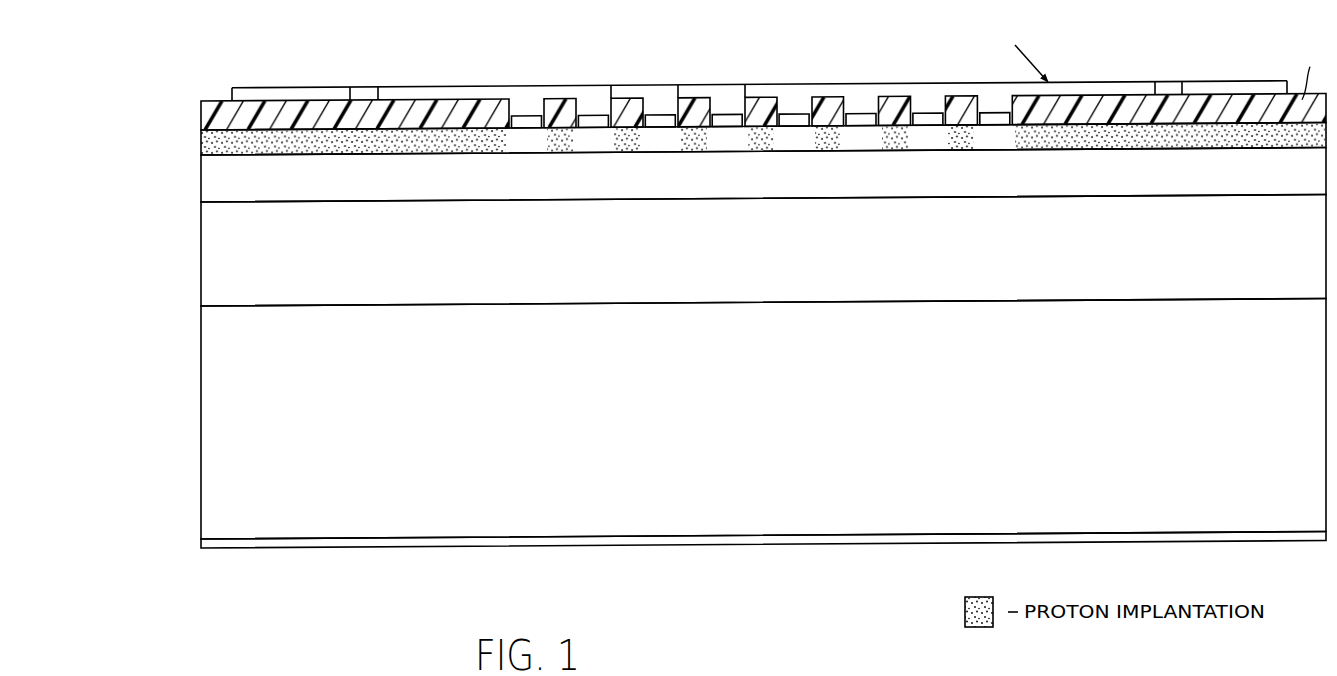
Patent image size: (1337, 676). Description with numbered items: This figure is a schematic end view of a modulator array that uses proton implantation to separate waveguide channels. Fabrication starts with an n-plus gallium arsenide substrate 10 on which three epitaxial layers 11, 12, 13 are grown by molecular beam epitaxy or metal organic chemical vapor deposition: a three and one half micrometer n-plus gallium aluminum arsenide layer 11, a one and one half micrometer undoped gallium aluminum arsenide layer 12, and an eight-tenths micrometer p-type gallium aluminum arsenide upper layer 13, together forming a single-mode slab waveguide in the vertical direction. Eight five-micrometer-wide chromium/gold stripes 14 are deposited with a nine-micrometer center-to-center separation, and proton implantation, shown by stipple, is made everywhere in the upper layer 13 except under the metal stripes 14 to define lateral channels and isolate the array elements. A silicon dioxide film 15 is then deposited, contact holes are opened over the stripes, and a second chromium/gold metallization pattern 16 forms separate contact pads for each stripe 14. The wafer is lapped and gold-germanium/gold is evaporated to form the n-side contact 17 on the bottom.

The n+-GaAs substrate 10 is at (204, 482).
The epitaxial layer 11 is at (204, 264).
The epitaxial layer 12 is at (204, 182).
The upper layer 13 is at (202, 141).
The Cr/Au stripes 14 is at (999, 121).
The SiO2 film 15 is at (203, 113).
The Cr/Au contact pad metallization pattern 16 is at (284, 94).
The n-side contact 17 is at (263, 547).